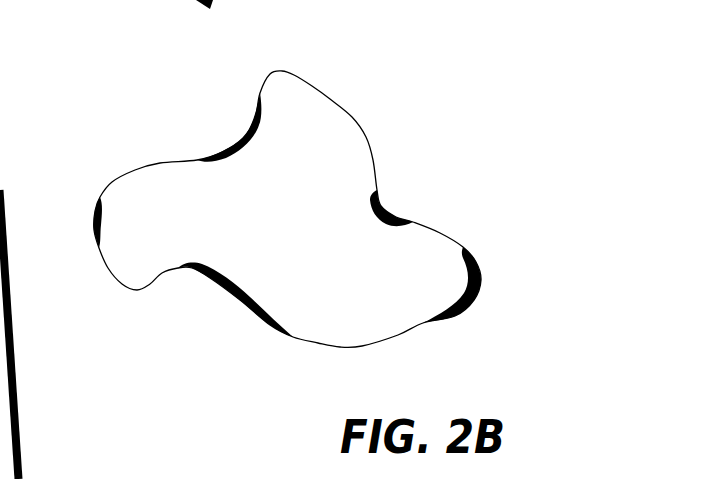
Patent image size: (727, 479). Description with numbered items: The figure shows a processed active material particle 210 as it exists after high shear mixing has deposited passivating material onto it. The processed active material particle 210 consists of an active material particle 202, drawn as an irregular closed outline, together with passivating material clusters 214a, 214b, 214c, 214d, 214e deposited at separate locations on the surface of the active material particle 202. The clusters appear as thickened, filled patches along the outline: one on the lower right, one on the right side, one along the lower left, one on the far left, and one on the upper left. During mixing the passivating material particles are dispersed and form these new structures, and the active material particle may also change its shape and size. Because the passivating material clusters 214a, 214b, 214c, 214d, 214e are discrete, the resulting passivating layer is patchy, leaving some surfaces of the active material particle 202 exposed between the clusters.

The active material particle 202 is at (307, 90).
The processed active material particle 210 is at (478, 119).
The passivating material cluster 214a is at (480, 298).
The passivating material cluster 214b is at (392, 200).
The passivating material cluster 214c is at (253, 313).
The passivating material cluster 214d is at (87, 220).
The passivating material cluster 214e is at (233, 133).